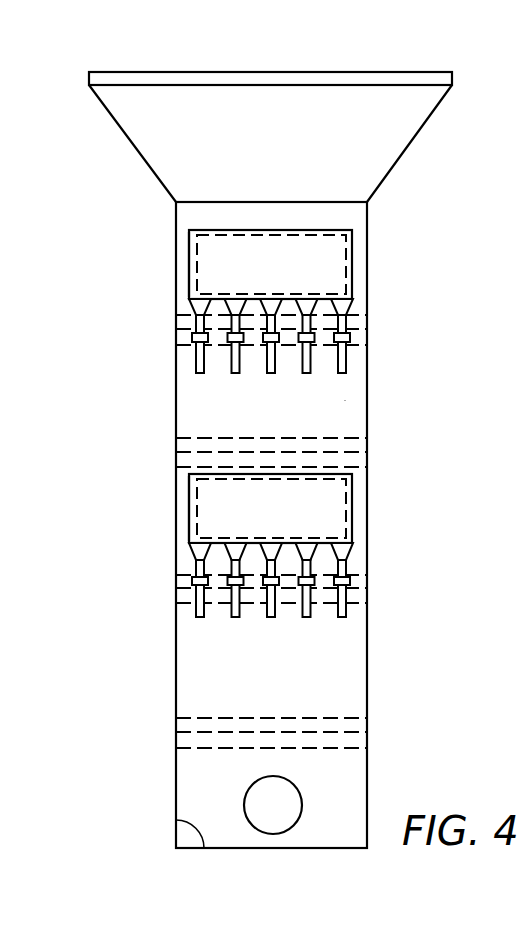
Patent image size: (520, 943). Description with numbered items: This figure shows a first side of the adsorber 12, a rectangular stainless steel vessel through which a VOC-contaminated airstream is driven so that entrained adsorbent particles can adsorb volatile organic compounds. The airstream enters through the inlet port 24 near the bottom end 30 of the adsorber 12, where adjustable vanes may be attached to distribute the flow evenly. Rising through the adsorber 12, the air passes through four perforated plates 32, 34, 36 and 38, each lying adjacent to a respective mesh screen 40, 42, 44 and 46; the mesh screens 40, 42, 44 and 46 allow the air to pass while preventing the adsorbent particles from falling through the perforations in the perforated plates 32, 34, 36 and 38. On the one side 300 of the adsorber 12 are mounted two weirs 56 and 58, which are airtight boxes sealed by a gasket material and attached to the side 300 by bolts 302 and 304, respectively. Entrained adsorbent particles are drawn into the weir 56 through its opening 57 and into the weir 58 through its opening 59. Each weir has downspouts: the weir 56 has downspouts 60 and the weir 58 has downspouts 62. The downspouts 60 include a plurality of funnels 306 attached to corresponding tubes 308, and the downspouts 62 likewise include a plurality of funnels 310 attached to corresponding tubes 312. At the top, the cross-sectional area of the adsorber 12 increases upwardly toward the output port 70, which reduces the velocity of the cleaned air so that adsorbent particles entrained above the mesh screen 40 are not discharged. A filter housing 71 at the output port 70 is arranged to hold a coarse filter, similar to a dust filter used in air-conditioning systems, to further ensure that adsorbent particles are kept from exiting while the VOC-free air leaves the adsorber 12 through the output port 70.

The adsorber 12 is at (370, 208).
The inlet port 24 is at (263, 795).
The bottom end 30 is at (176, 820).
The perforated plate 32 is at (185, 338).
The perforated plate 34 is at (185, 459).
The perforated plate 36 is at (185, 596).
The perforated plate 38 is at (185, 740).
The mesh screen 40 is at (176, 320).
The mesh screen 42 is at (176, 441).
The mesh screen 44 is at (176, 583).
The mesh screen 46 is at (176, 722).
The weir 56 is at (358, 240).
The opening 57 is at (325, 267).
The weir 58 is at (358, 484).
The opening 59 is at (325, 509).
The downspout 60 is at (291, 337).
The downspout 62 is at (291, 585).
The output port 70 is at (372, 70).
The filter housing 71 is at (437, 77).
The one side 300 is at (345, 400).
The bolts 302 is at (191, 263).
The bolts 304 is at (191, 507).
The funnels 306 is at (355, 308).
The tubes 308 is at (352, 358).
The funnels 310 is at (355, 550).
The tubes 312 is at (352, 610).